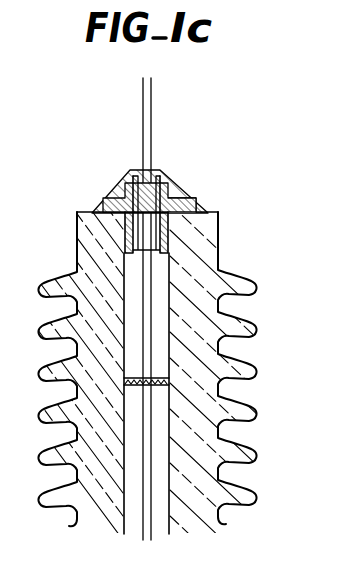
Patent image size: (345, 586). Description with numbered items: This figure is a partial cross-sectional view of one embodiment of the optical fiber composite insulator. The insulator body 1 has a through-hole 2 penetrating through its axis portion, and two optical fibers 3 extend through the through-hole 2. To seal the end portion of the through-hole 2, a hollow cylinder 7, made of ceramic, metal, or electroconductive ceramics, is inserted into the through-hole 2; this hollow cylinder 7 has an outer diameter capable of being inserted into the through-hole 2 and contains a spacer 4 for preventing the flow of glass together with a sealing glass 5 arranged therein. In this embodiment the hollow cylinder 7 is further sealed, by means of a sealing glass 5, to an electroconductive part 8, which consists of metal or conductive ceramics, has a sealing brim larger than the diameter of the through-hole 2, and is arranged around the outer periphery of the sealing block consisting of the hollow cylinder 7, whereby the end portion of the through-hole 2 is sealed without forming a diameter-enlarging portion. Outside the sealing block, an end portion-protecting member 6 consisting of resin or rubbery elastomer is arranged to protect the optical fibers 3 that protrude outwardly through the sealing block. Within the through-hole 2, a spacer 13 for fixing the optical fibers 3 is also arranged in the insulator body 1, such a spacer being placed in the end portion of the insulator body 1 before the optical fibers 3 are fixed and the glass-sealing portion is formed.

The insulator body 1 is at (219, 388).
The through-hole 2 is at (174, 436).
The optical fibers 3 is at (152, 117).
The spacer 4 is at (170, 241).
The sealing glass 5 is at (118, 203).
The end portion-protecting member 6 is at (160, 172).
The hollow cylinder 7 is at (126, 240).
The electroconductive part 8 is at (170, 182).
The spacer 13 is at (156, 372).